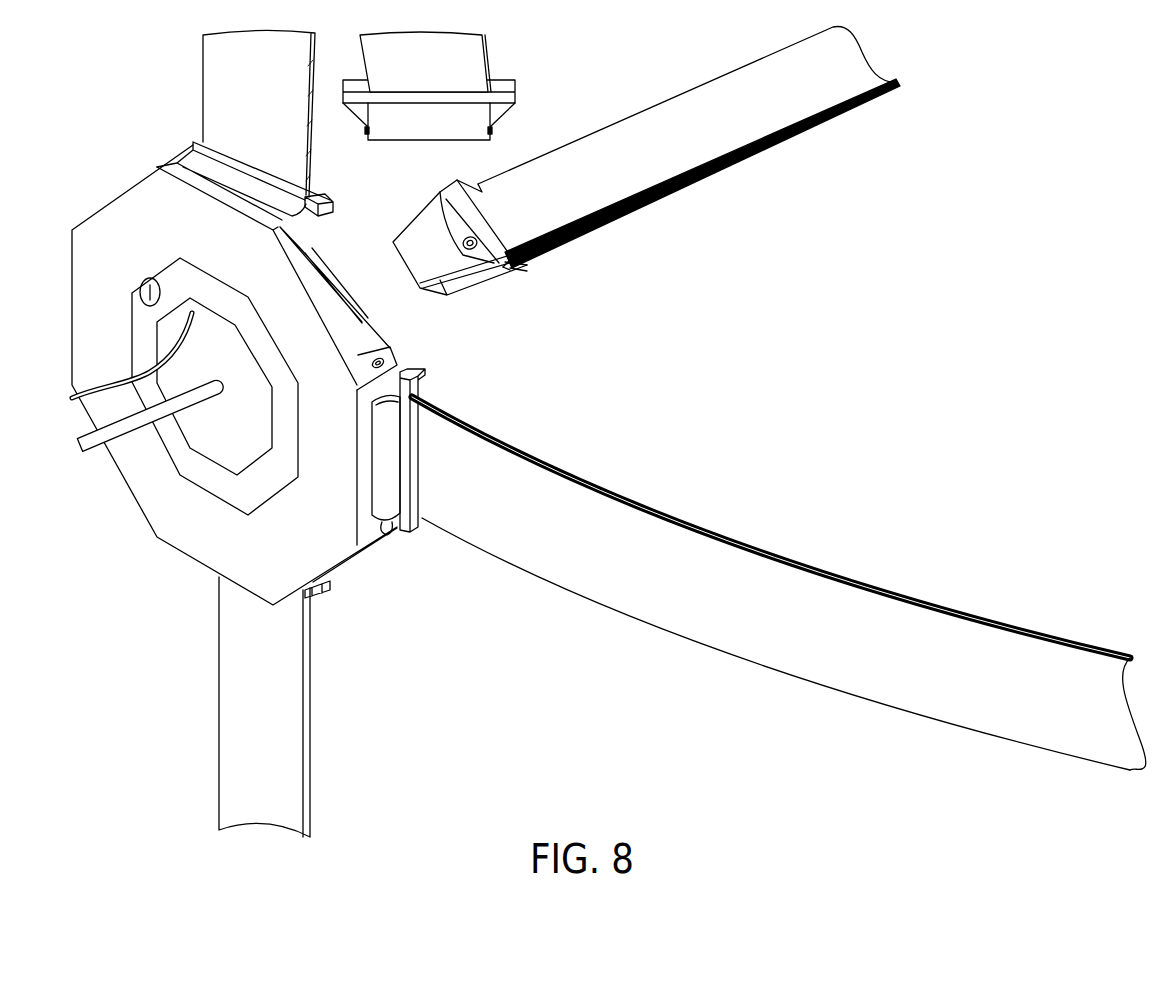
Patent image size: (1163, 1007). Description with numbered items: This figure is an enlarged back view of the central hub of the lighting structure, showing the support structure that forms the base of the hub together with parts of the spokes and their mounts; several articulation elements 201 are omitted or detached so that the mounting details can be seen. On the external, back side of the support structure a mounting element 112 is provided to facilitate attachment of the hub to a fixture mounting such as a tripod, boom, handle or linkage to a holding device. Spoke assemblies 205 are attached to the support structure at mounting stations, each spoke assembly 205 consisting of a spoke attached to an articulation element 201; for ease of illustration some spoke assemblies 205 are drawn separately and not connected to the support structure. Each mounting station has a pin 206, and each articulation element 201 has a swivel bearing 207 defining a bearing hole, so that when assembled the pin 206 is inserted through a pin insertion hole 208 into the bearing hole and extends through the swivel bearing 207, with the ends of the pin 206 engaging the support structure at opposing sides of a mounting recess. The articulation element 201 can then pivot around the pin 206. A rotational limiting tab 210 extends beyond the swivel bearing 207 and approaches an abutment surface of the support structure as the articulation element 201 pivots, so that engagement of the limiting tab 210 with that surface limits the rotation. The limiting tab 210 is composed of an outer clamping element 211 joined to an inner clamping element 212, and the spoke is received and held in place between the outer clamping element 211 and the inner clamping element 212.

The mounting element 112 is at (133, 428).
The articulation element 201 is at (238, 96).
The spoke assembly 205 is at (414, 76).
The pin 206 is at (323, 277).
The swivel bearing 207 is at (443, 197).
The pin insertion hole 208 is at (318, 200).
The limiting tab 210 is at (417, 255).
The outer clamping element 211 is at (481, 190).
The inner clamping element 212 is at (517, 266).